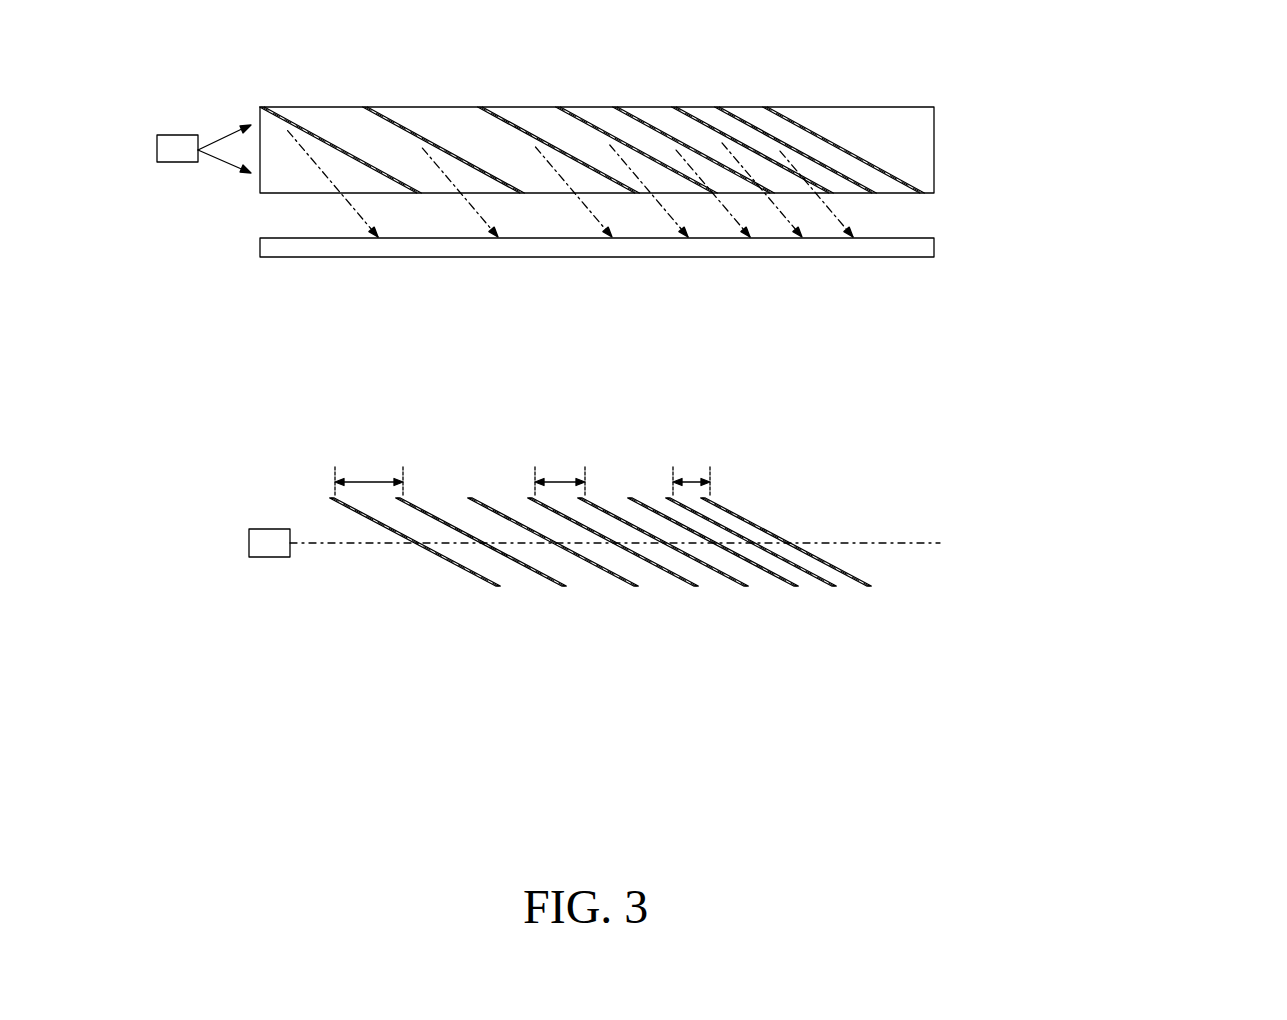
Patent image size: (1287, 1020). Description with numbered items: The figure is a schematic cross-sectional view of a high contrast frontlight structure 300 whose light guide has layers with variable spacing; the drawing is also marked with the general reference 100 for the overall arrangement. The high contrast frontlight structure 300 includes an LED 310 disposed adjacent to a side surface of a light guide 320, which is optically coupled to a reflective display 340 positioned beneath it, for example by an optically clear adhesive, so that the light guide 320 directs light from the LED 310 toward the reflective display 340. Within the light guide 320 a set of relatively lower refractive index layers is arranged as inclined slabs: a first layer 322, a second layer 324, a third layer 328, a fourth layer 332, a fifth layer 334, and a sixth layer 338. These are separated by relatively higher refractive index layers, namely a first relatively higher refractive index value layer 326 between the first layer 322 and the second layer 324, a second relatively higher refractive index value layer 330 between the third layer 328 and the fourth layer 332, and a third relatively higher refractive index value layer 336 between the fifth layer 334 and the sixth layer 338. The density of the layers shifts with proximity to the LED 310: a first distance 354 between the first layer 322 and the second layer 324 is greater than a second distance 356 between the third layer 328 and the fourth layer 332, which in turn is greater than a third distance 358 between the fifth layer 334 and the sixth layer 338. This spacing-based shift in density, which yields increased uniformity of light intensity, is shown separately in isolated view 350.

The optical system 100 is at (1181, 140).
The high contrast frontlight structure 300 is at (1031, 50).
The LED 310 is at (157, 148).
The light guide 320 is at (935, 155).
The first layer 322 is at (315, 130).
The second layer 324 is at (410, 130).
The first relatively higher refractive index value layer 326 is at (480, 180).
The third layer 328 is at (585, 118).
The second relatively higher refractive index value layer 330 is at (738, 183).
The fourth layer 332 is at (643, 118).
The fifth layer 334 is at (748, 118).
The third relatively higher refractive index value layer 336 is at (890, 188).
The sixth layer 338 is at (795, 118).
The reflective display 340 is at (935, 248).
The isolated view 350 is at (990, 506).
The first distance 354 is at (368, 480).
The second distance 356 is at (560, 480).
The third distance 358 is at (688, 480).